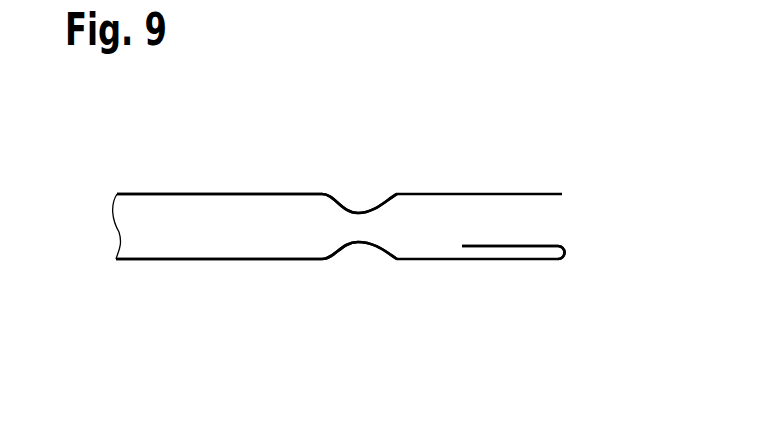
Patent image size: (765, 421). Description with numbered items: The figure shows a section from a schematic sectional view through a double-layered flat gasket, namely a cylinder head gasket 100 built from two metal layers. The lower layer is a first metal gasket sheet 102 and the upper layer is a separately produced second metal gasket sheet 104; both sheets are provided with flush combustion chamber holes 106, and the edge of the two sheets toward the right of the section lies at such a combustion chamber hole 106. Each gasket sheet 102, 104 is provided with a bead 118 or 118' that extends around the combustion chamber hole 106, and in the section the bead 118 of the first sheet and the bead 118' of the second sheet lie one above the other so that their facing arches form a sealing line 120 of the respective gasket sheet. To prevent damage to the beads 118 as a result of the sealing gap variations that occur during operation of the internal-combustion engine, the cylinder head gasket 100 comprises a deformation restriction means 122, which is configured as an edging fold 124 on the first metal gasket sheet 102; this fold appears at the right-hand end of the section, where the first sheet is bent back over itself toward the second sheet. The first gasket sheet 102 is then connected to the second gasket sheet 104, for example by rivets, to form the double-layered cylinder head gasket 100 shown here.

The cylinder head gasket 100 is at (514, 160).
The first metal gasket sheet 102 is at (201, 260).
The second metal gasket sheet 104 is at (202, 193).
The combustion chamber hole 106 is at (668, 257).
The bead 118 is at (359, 296).
The bead 118' is at (359, 161).
The sealing line 120 is at (356, 214).
The deformation restriction means 122 is at (546, 234).
The edging fold 124 is at (572, 261).